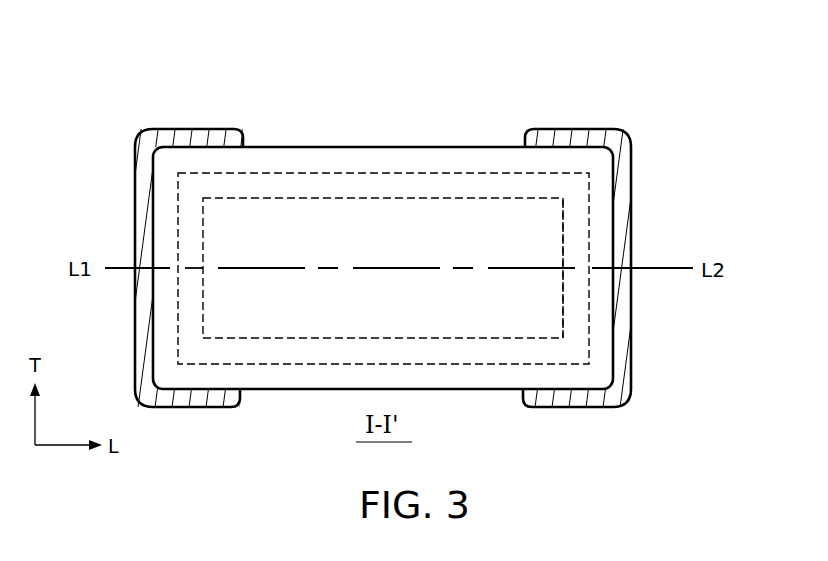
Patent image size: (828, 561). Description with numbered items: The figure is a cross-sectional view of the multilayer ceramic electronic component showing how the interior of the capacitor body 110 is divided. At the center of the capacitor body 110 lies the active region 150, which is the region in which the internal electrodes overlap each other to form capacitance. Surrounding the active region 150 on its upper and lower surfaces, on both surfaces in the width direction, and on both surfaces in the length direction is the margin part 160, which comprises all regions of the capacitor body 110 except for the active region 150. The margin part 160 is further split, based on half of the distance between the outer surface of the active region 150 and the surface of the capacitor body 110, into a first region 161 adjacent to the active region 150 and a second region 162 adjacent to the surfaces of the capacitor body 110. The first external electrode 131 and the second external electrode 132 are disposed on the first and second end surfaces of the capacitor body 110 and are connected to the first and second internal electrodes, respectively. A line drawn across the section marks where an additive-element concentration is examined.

The capacitor body 110 is at (383, 268).
The first external electrode 131 is at (191, 130).
The second external electrode 132 is at (580, 140).
The active region 150 is at (578, 250).
The margin part 160 is at (383, 205).
The first region 161 is at (328, 185).
The second region 162 is at (323, 83).